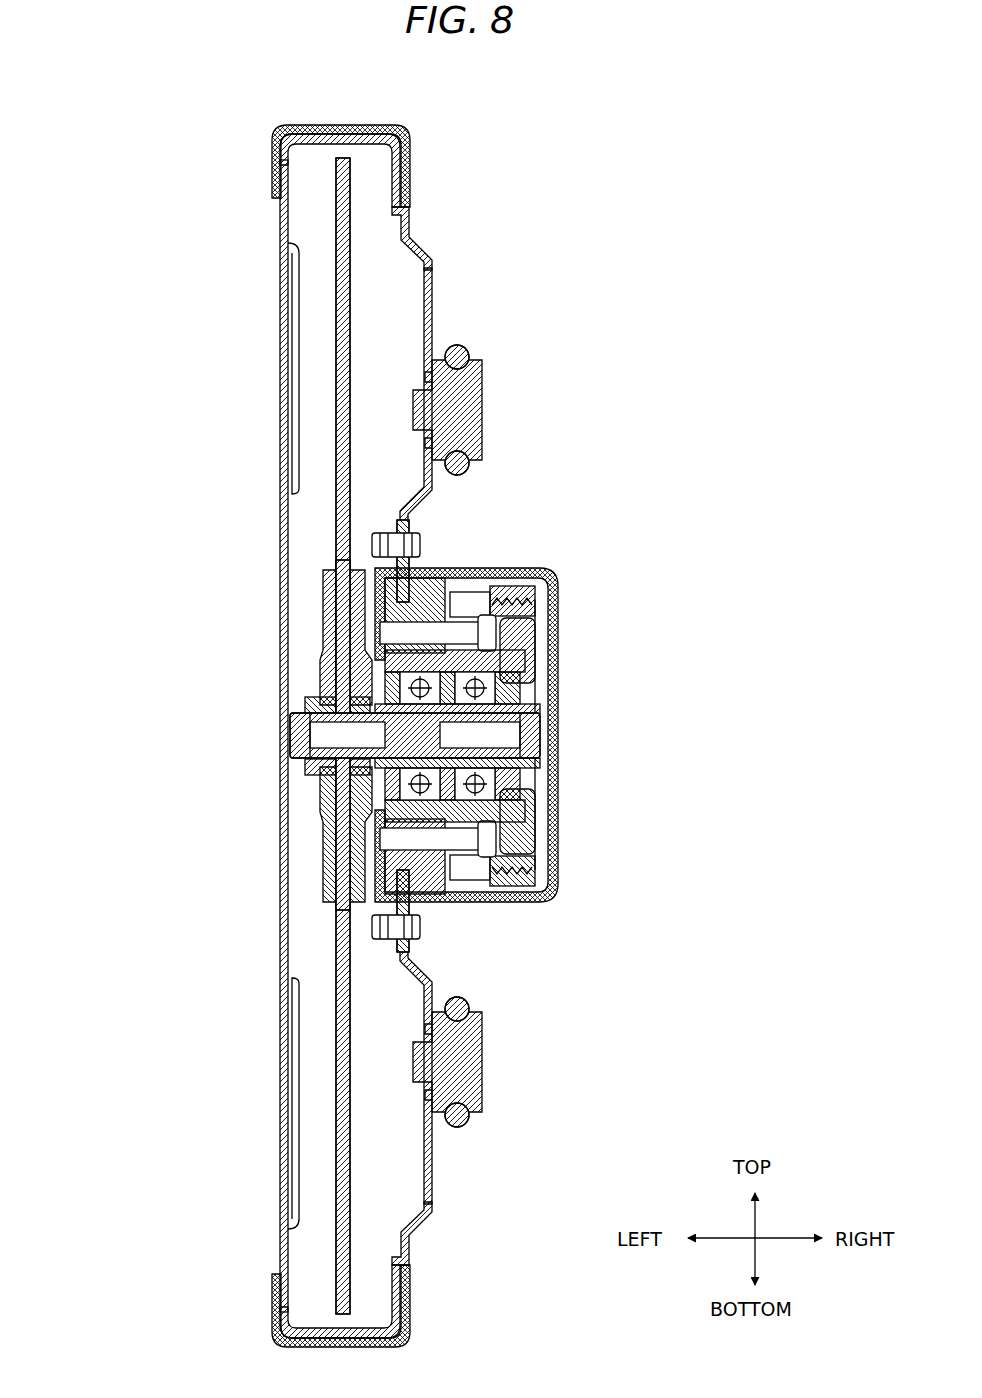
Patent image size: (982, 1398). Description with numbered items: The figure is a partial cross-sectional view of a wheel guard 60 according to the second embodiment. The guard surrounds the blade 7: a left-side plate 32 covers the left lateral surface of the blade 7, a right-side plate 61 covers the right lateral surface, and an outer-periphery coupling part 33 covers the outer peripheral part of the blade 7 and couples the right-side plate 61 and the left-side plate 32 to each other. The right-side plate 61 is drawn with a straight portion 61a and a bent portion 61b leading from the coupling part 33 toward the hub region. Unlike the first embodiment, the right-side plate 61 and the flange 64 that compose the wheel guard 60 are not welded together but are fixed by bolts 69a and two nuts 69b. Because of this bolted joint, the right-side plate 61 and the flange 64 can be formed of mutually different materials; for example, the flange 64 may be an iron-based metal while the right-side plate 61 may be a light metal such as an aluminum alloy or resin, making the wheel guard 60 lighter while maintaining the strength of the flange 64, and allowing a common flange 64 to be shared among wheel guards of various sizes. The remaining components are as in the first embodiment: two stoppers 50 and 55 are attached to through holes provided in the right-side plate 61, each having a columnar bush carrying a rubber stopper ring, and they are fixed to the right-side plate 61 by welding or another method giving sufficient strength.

The wheel guard 60 is at (118, 142).
The outer-periphery coupling part 33 is at (339, 124).
The right-side plate 61 is at (411, 213).
The frame straight portion 61a is at (437, 293).
The frame bent portion 61b is at (399, 216).
The left-side plate 32 is at (281, 343).
The stopper 50 is at (489, 407).
The stopper 55 is at (489, 1062).
The bolt 69a is at (423, 540).
The nut 69b is at (395, 534).
The flange 64 is at (416, 893).
The blade 7 is at (337, 963).